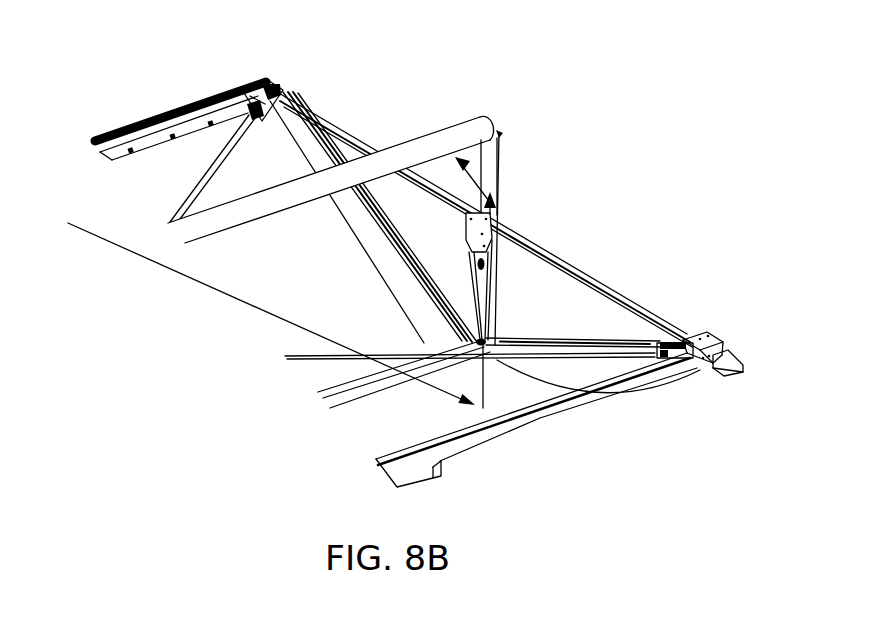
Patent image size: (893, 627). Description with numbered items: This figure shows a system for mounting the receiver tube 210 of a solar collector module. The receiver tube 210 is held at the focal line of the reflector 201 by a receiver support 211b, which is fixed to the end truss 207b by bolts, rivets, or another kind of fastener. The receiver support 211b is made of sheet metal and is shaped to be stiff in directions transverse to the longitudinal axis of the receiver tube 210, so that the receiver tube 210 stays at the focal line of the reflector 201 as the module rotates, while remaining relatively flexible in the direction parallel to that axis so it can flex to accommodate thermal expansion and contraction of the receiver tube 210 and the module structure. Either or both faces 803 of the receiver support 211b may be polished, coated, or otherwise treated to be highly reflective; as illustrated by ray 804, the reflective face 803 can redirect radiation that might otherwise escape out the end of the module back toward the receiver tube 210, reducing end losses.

The reflector 201 is at (390, 325).
The receiver tube 210 is at (245, 212).
The receiver support 211b is at (508, 165).
The face of the receiver support 803 is at (497, 178).
The end truss 207b is at (550, 338).
The ray 804 is at (213, 290).